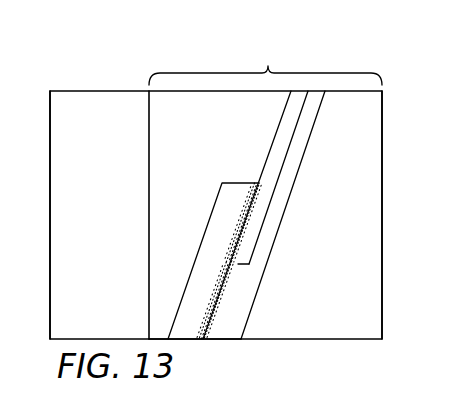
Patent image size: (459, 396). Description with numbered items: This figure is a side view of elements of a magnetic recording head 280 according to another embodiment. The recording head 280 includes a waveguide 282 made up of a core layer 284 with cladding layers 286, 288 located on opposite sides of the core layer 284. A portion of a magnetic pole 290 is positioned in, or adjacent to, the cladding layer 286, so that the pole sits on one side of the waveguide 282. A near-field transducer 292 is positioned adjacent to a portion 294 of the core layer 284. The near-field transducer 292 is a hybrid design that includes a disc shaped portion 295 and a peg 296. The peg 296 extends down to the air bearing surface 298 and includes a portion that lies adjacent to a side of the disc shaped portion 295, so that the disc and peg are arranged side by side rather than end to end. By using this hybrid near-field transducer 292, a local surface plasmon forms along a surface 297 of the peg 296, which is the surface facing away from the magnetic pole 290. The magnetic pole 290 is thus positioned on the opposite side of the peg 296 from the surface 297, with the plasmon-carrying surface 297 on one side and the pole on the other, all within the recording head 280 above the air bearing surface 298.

The magnetic recording head 280 is at (207, 182).
The waveguide 282 is at (265, 64).
The core layer 284 is at (302, 142).
The cladding layer 286 is at (182, 109).
The cladding layer 288 is at (375, 124).
The magnetic pole 290 is at (63, 177).
The near-field transducer 292 is at (209, 237).
The portion of the core layer 294 is at (265, 232).
The disc shaped portion 295 is at (260, 190).
The peg 296 is at (208, 280).
The surface of the peg 297 is at (218, 315).
The air bearing surface 298 is at (190, 339).